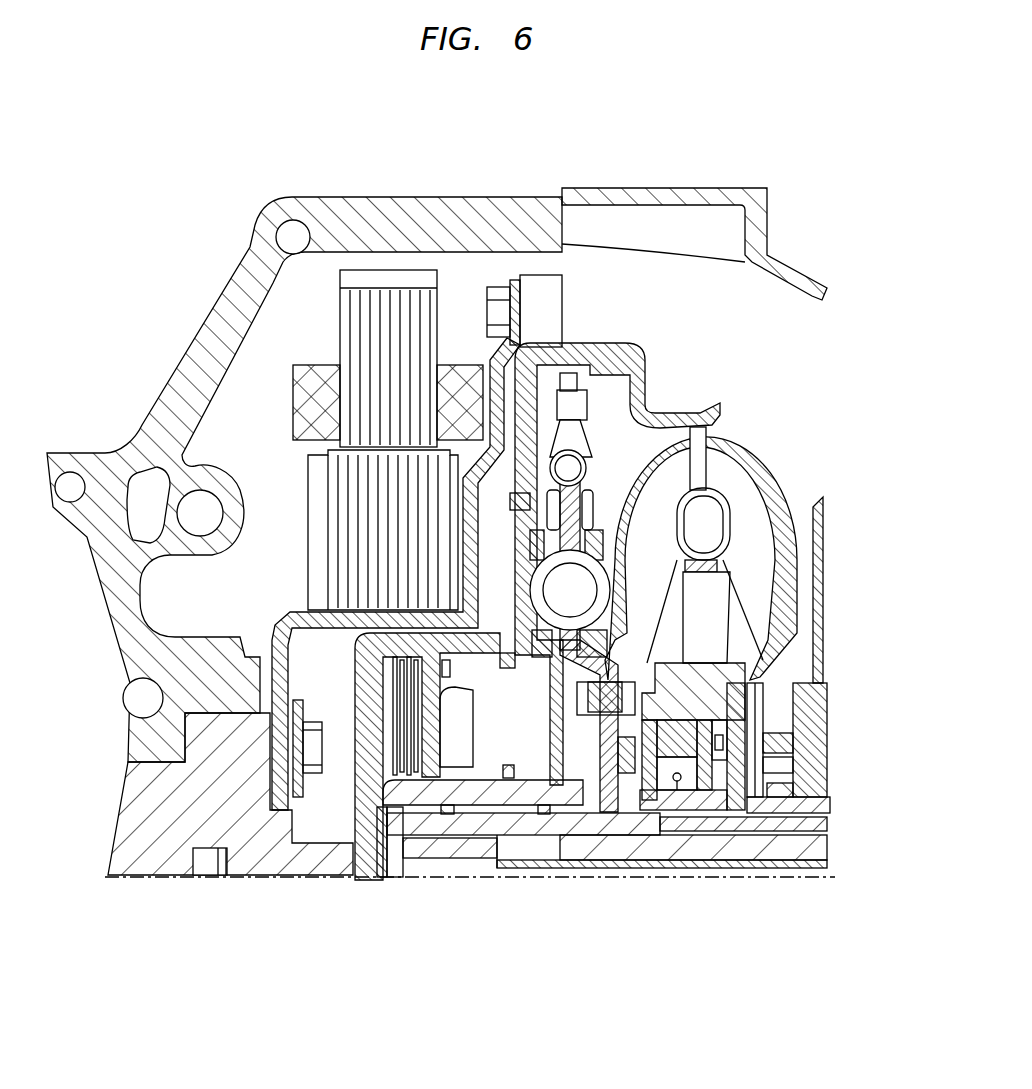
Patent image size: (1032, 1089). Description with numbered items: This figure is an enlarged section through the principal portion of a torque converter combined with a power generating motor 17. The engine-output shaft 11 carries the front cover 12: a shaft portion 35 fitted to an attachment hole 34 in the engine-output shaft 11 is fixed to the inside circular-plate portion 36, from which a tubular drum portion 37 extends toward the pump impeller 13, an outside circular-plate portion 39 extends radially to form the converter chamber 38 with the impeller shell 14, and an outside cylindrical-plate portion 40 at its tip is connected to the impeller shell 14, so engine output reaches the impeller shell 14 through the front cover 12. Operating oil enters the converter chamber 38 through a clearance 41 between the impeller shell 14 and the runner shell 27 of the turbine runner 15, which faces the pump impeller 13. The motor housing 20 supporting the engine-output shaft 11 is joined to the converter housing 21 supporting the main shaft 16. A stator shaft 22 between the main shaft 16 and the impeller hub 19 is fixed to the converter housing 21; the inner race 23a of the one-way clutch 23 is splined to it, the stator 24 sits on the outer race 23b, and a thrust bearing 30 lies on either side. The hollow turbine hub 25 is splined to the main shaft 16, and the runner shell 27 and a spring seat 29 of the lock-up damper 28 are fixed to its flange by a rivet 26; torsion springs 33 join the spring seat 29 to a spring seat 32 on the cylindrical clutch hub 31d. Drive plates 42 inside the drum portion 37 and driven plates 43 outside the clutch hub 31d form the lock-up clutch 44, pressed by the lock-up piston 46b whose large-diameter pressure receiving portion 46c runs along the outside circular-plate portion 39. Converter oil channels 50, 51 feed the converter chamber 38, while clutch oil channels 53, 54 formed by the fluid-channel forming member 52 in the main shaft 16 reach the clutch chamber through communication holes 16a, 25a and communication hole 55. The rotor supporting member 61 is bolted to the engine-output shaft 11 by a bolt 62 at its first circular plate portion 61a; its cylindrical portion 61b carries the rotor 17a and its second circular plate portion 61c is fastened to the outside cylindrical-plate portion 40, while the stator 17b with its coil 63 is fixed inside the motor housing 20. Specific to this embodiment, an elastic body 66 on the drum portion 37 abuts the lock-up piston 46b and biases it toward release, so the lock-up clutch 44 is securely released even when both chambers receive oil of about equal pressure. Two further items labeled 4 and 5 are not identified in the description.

The friction plate 4 is at (457, 713).
The friction plate 5 is at (468, 751).
The engine-output shaft 11 is at (130, 790).
The front cover 12 is at (362, 817).
The pump impeller 13 is at (765, 529).
The impeller shell 14 is at (780, 440).
The turbine runner 15 is at (657, 529).
The main shaft 16 is at (790, 845).
The communication hole 16a is at (530, 840).
The power generating motor 17 is at (333, 440).
The rotor 17a is at (365, 480).
The stator 17b is at (370, 432).
The impeller hub 19 is at (800, 805).
The motor housing 20 is at (430, 205).
The converter housing 21 is at (624, 188).
The stator shaft 22 is at (790, 822).
The one-way clutch 23 is at (832, 740).
The inner race 23a is at (780, 780).
The outer race 23b is at (780, 752).
The stator 24 is at (715, 619).
The turbine hub 25 is at (410, 840).
The communication hole 25a is at (500, 838).
The rivet 26 is at (580, 712).
The runner shell 27 is at (684, 428).
The lock-up damper 28 is at (598, 422).
The spring seat 29 is at (590, 670).
The thrust bearing 30 is at (618, 752).
The clutch hub 31d is at (515, 778).
The spring seat 32 is at (548, 728).
The torsion springs 33 is at (583, 602).
The attachment hole 34 is at (218, 860).
The shaft portion 35 is at (268, 862).
The inside circular-plate portion 36 is at (353, 860).
The drum portion 37 is at (395, 640).
The converter chamber 38 is at (620, 464).
The outside circular-plate portion 39 is at (487, 555).
The outside cylindrical-plate portion 40 is at (598, 345).
The clearance 41 is at (718, 412).
The drive plates 42 is at (395, 687).
The driven plates 43 is at (395, 710).
The lock-up clutch 44 is at (380, 727).
The lock-up piston 46b is at (447, 815).
The large-diameter pressure receiving portion 46c is at (512, 668).
The converter oil channel 50 is at (780, 832).
The converter oil channel 51 is at (800, 840).
The fluid-channel forming member 52 is at (718, 868).
The clutch oil channel 53 is at (692, 868).
The clutch oil channel 54 is at (748, 868).
The communication hole 55 is at (390, 870).
The rotor supporting member 61 is at (282, 605).
The first circular plate portion 61a is at (275, 690).
The cylindrical portion 61b is at (395, 590).
The second circular plate portion 61c is at (483, 430).
The bolt 62 is at (305, 725).
The coil 63 is at (300, 390).
The elastic body 66 is at (460, 670).